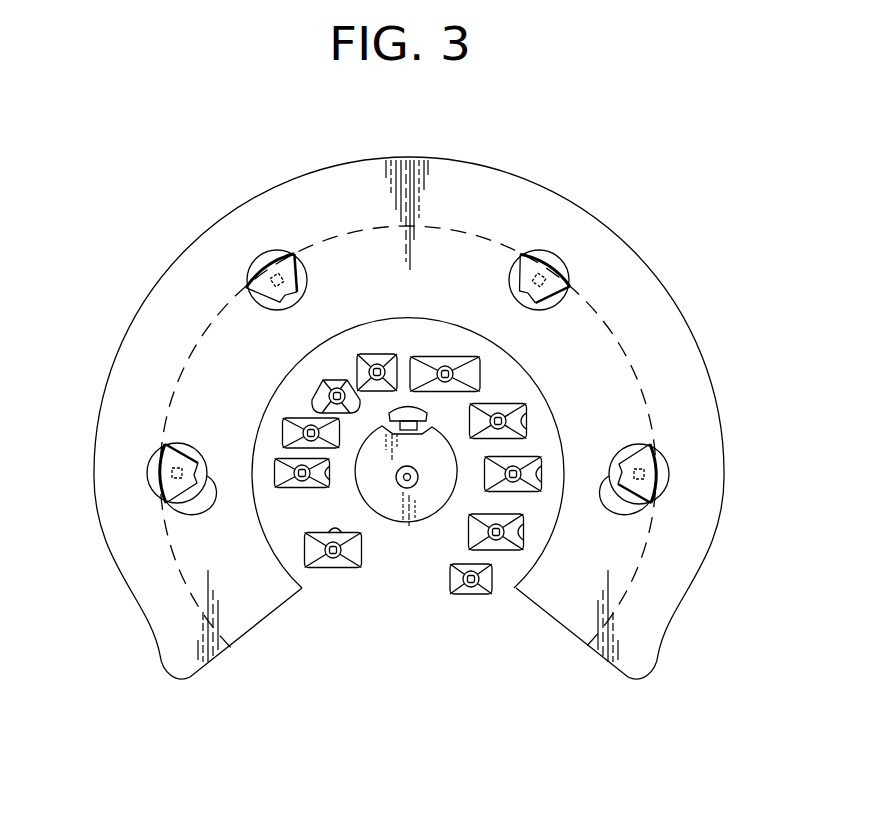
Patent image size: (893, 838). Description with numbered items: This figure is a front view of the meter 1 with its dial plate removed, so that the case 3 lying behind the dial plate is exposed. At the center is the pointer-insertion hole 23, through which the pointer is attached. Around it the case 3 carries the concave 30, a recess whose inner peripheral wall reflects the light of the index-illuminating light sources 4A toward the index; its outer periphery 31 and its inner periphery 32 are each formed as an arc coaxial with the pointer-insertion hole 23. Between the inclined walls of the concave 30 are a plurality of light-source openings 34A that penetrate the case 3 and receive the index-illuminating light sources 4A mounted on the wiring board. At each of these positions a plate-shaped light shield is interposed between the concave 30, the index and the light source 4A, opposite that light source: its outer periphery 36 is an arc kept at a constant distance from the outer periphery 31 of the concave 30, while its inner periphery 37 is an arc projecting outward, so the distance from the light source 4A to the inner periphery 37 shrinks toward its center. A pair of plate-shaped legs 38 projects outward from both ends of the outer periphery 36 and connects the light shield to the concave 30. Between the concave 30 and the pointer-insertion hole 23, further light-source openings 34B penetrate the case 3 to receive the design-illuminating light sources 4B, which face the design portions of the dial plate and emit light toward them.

The meter 1 is at (746, 303).
The case 3 is at (704, 362).
The pointer-insertion hole 23 is at (404, 482).
The concave 30 is at (224, 615).
The outer periphery of the concave 31 is at (670, 322).
The inner periphery of the concave 32 is at (282, 565).
The light-source opening 34A is at (152, 480).
The light-source opening 34B is at (330, 480).
The outer periphery of the light shield 36 is at (160, 466).
The inner periphery of the light shield 37 is at (200, 517).
The leg 38 is at (165, 444).
The index-illuminating light source 4A is at (150, 470).
The design-illuminating light source 4B is at (372, 374).